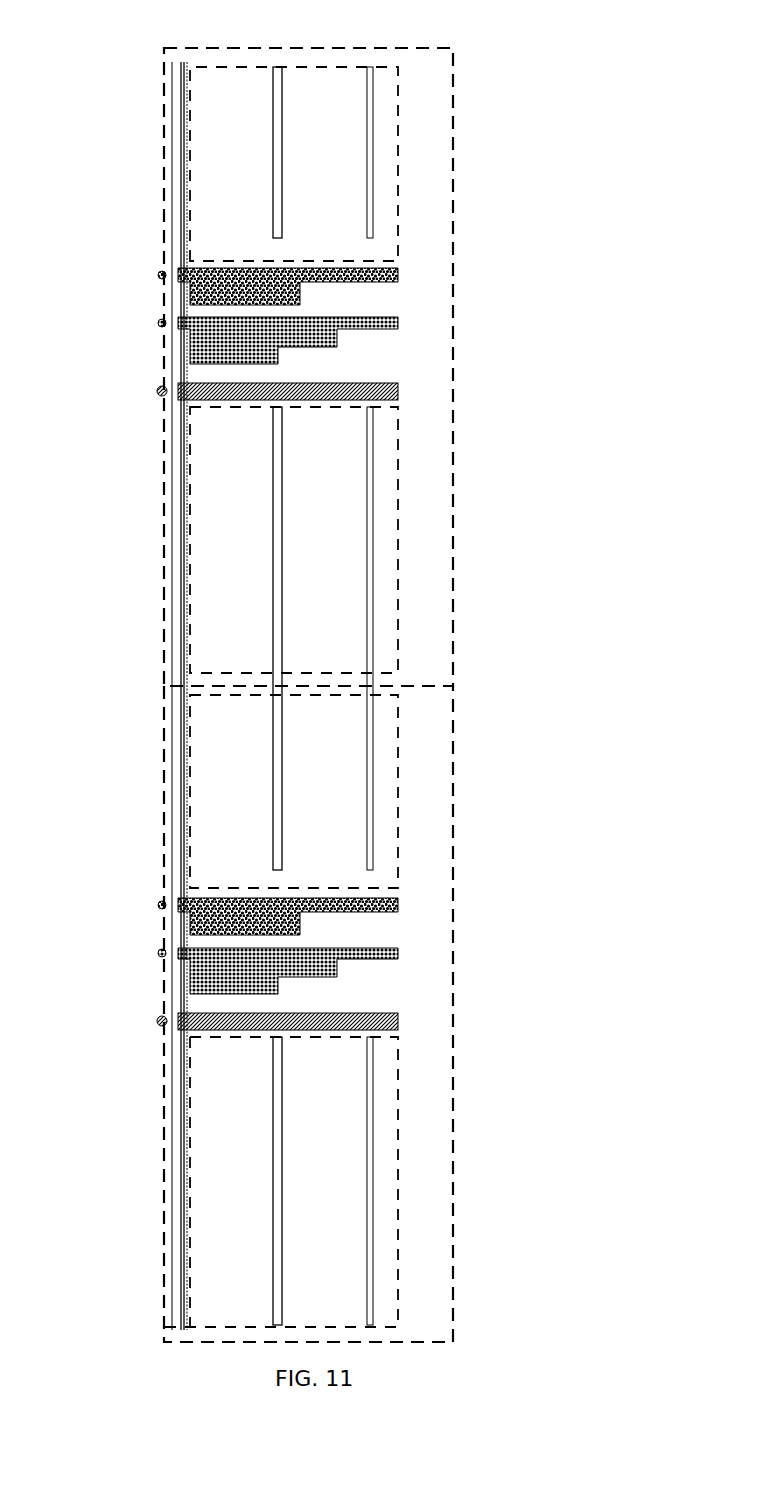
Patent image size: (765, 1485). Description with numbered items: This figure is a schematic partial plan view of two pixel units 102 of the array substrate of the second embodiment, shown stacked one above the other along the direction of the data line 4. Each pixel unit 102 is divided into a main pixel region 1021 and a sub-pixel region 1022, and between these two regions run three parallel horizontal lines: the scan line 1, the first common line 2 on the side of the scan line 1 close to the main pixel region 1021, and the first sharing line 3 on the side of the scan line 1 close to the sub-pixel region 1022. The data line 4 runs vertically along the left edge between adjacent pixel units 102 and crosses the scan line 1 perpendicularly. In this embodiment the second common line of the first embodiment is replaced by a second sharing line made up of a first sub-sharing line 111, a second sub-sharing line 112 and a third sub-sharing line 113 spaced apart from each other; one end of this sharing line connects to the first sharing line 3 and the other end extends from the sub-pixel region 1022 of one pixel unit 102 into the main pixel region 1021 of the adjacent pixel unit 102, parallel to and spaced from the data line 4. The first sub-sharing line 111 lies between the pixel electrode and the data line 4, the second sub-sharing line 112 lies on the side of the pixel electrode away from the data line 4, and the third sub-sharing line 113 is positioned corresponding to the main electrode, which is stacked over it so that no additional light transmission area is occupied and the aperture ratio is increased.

The pixel unit 102 is at (453, 245).
The main pixel region 1021 is at (398, 135).
The sub-pixel region 1022 is at (398, 538).
The third sub-sharing line 113 is at (277, 80).
The second sub-sharing line 112 is at (369, 117).
The first sub-sharing line 111 is at (189, 198).
The data line 4 is at (172, 155).
The scan line 1 is at (162, 323).
The first common line 2 is at (162, 275).
The first sharing line 3 is at (162, 392).